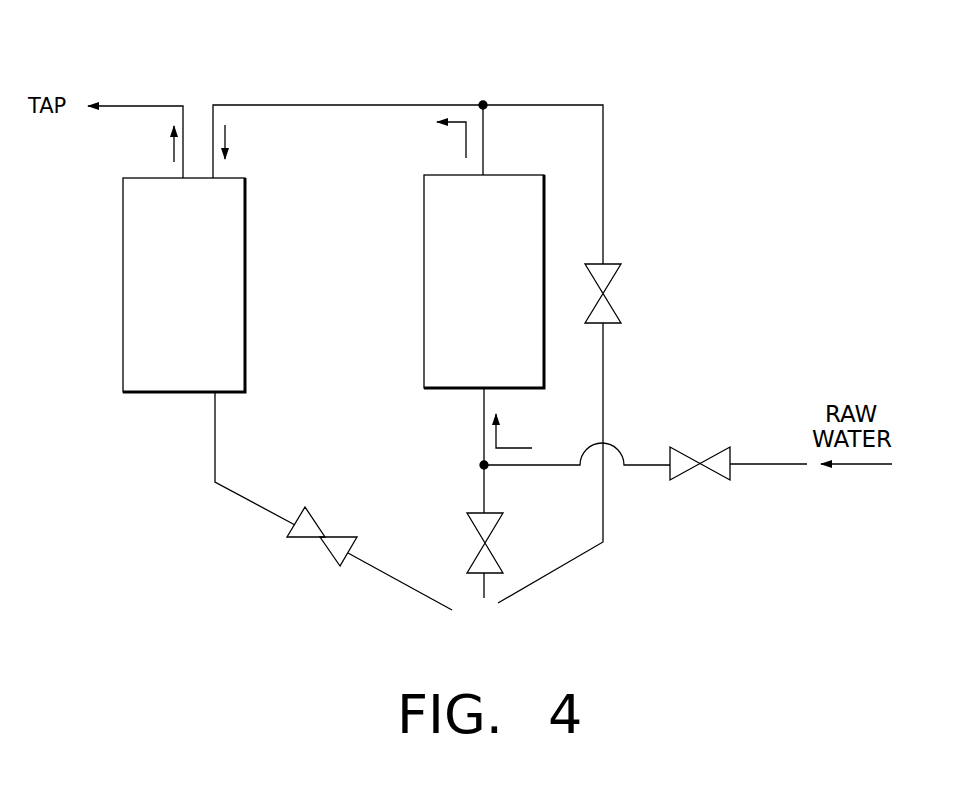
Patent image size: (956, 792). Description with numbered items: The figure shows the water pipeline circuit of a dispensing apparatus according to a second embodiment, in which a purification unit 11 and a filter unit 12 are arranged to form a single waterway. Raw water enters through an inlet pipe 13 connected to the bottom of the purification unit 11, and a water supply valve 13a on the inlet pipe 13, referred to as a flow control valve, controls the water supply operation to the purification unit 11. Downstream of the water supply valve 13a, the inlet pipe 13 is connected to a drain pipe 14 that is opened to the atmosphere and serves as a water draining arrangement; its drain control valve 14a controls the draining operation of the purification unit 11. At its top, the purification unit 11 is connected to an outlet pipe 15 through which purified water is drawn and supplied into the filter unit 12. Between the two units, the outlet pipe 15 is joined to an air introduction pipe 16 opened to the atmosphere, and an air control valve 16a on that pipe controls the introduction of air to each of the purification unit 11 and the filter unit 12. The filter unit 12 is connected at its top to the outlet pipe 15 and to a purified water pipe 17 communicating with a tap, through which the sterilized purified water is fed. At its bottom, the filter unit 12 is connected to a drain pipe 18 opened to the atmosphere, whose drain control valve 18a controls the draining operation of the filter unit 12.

The purification unit 11 is at (423, 283).
The filter unit 12 is at (123, 283).
The inlet pipe 13 is at (552, 465).
The water supply valve 13a is at (700, 467).
The drain pipe 14 is at (484, 492).
The drain control valve 14a is at (484, 553).
The outlet pipe 15 is at (362, 105).
The air introduction pipe 16 is at (603, 358).
The air control valve 16a is at (606, 294).
The purified water pipe 17 is at (159, 106).
The drain pipe 18 is at (255, 502).
The drain control valve 18a is at (333, 535).